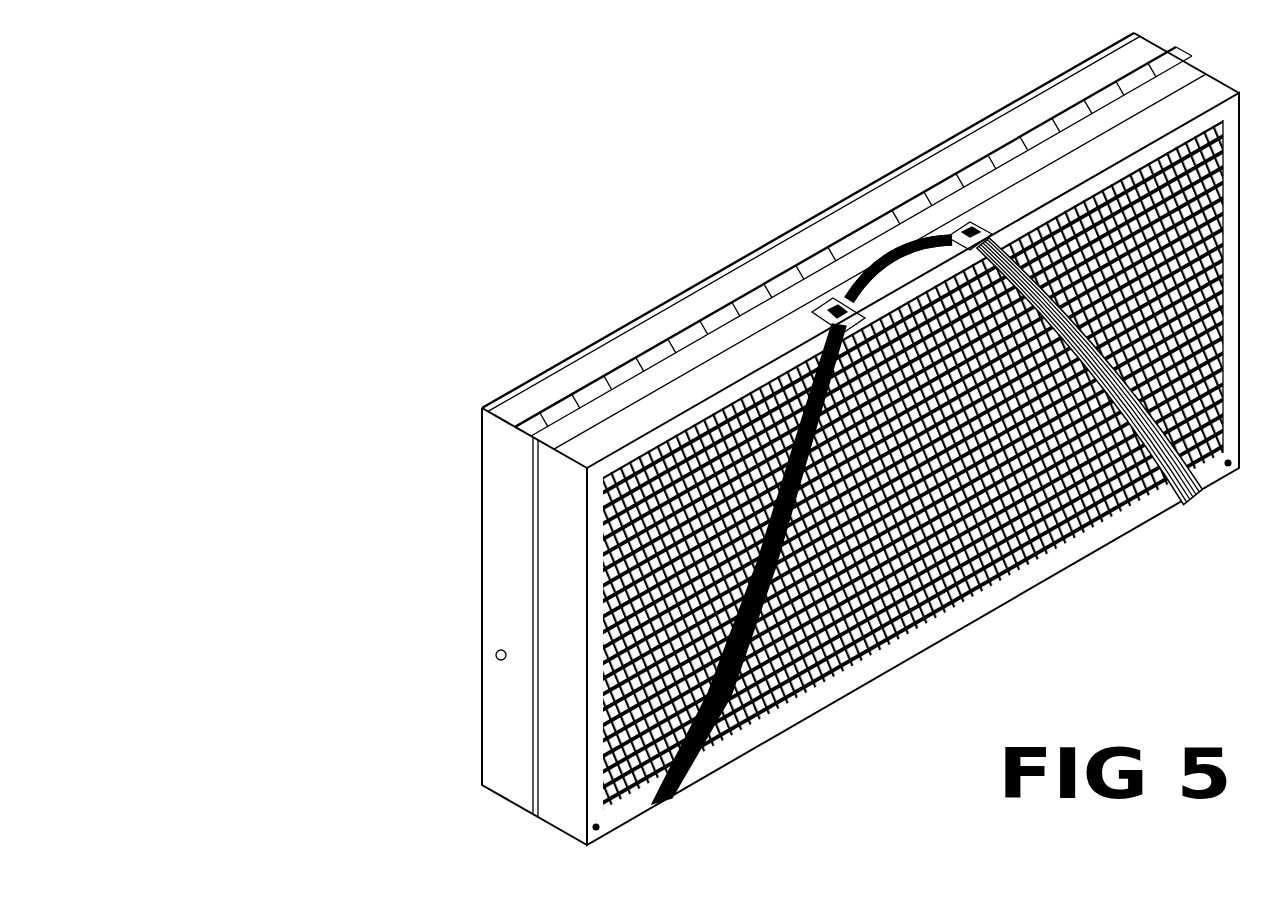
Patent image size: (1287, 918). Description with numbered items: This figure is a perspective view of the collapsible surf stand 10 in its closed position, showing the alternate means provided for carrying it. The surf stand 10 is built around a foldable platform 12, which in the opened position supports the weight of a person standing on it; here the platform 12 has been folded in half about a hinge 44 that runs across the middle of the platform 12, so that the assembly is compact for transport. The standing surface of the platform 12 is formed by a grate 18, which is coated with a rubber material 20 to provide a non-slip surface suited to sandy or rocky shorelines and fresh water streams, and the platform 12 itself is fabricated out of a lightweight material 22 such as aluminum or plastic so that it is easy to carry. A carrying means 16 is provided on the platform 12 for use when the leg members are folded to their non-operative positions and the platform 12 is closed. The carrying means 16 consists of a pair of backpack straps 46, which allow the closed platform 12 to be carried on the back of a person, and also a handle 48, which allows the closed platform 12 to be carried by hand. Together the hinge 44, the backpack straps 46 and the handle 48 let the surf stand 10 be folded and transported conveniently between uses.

The collapsible surf stand 10 is at (516, 259).
The foldable platform 12 is at (486, 495).
The carrying means 16 is at (877, 262).
The grate 18 is at (915, 630).
The rubber material 20 is at (985, 595).
The lightweight material 22 is at (496, 655).
The hinge 44 is at (690, 345).
The backpack straps 46 is at (1197, 503).
The handle 48 is at (942, 238).